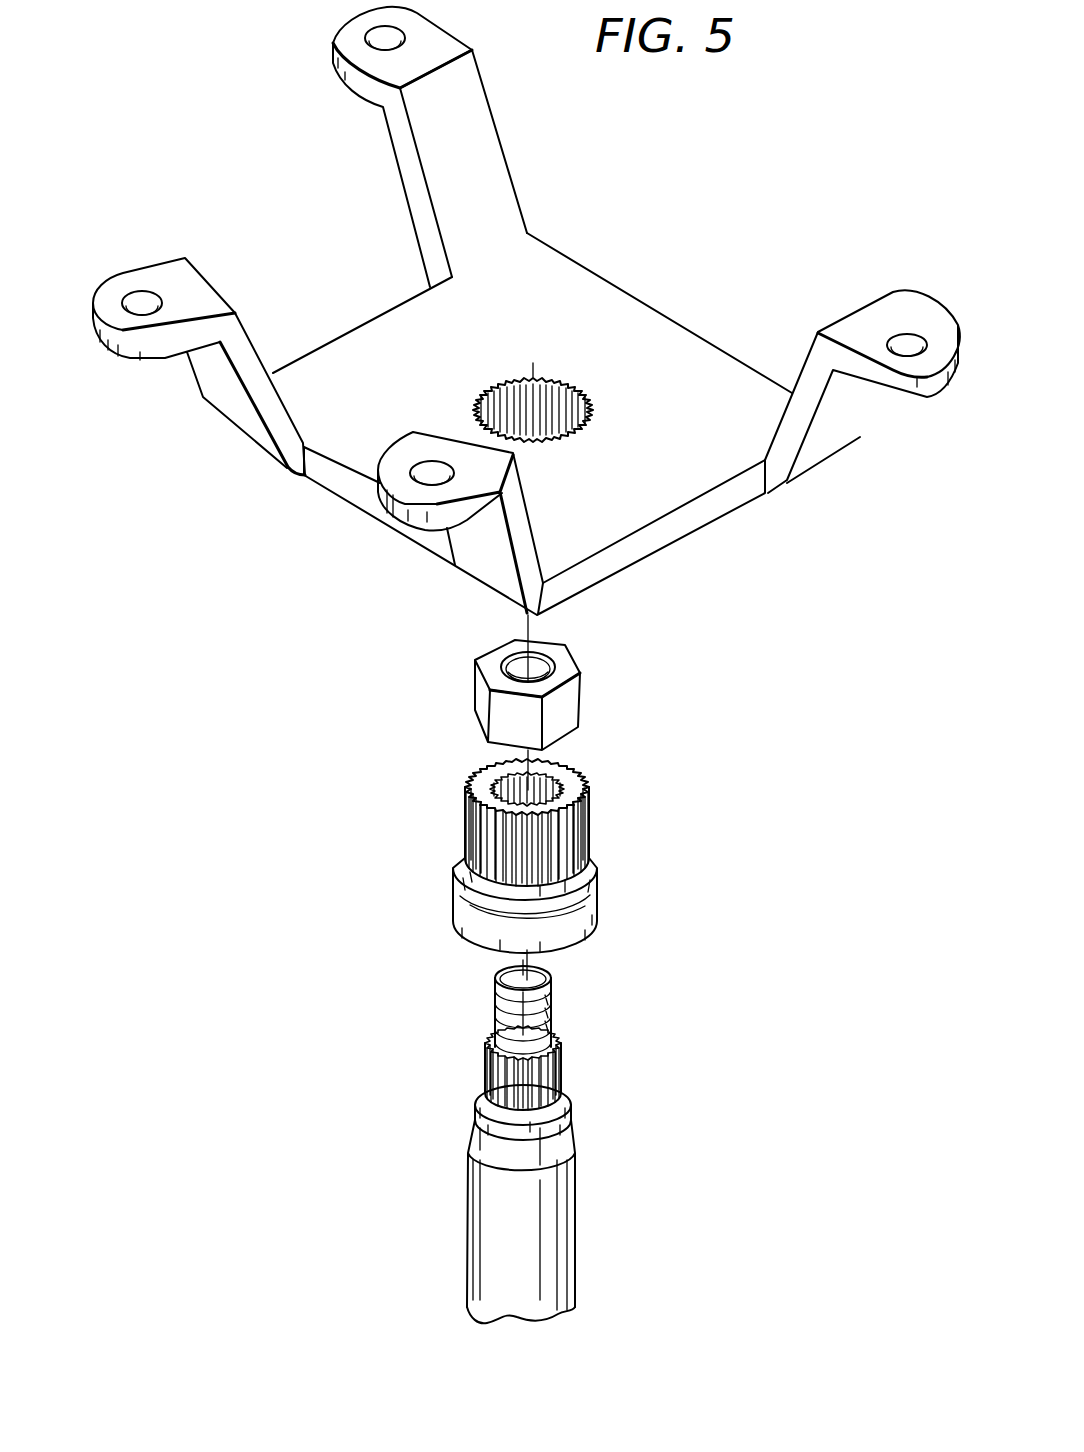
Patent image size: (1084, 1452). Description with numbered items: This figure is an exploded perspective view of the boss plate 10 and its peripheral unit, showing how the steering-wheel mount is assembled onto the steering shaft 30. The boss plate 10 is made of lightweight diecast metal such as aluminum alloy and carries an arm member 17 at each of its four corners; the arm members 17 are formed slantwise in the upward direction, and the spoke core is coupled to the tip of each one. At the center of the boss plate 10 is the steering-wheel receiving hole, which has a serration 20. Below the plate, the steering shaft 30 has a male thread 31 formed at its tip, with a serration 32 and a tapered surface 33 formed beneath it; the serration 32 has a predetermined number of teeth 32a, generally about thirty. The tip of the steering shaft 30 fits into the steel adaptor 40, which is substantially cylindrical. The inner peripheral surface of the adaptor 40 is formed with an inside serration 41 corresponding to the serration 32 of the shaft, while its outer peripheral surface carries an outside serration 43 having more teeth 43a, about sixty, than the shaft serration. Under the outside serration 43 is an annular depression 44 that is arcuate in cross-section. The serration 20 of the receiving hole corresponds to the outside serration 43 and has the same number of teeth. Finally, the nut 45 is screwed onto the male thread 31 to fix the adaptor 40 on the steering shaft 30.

The boss plate 10 is at (715, 345).
The arm member 17 is at (495, 155).
The serration 20 is at (565, 400).
The steering shaft 30 is at (522, 1141).
The male thread 31 is at (553, 1000).
The serration 32 is at (514, 1068).
The teeth 32a is at (483, 1064).
The tapered surface 33 is at (573, 1120).
The adaptor 40 is at (516, 851).
The serration 41 is at (497, 778).
The serration 43 is at (510, 822).
The teeth 43a is at (477, 843).
The annular depression 44 is at (463, 903).
The nut 45 is at (582, 700).